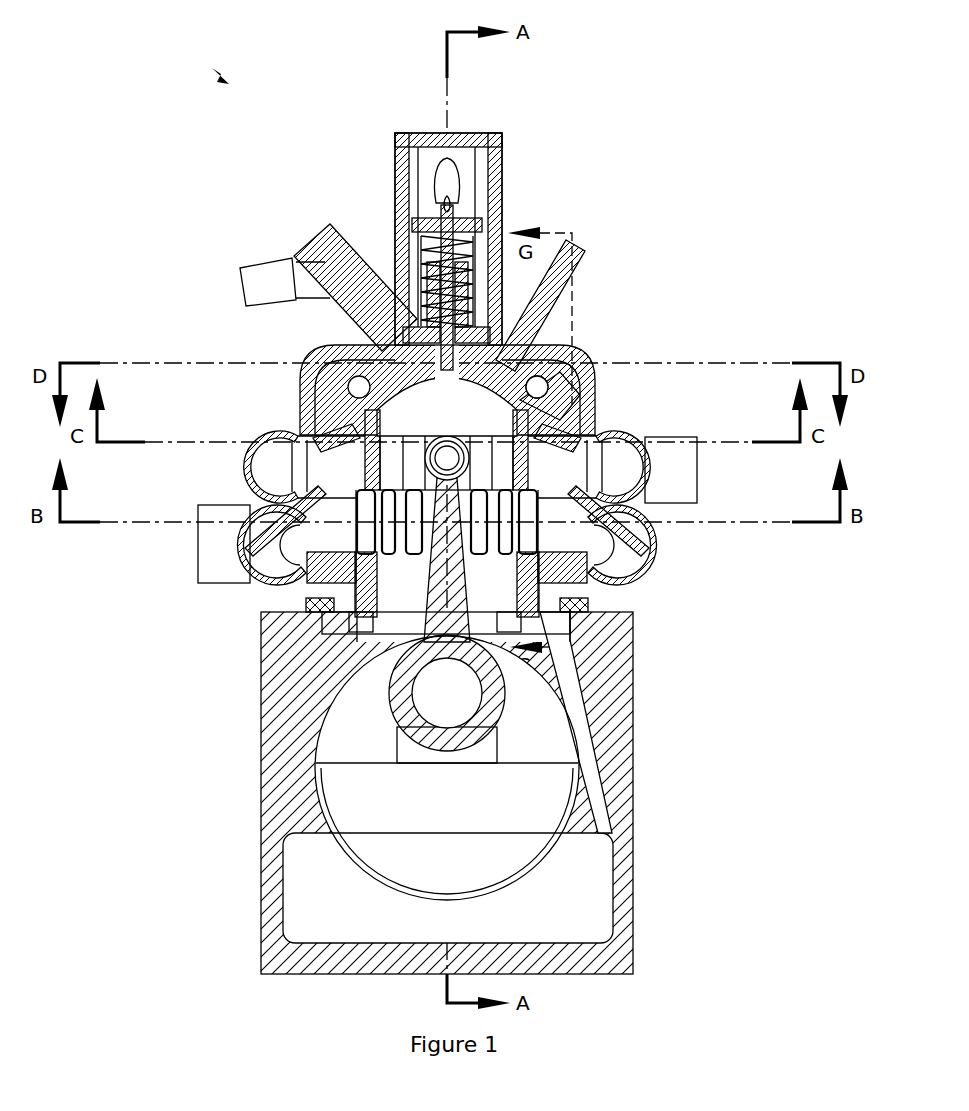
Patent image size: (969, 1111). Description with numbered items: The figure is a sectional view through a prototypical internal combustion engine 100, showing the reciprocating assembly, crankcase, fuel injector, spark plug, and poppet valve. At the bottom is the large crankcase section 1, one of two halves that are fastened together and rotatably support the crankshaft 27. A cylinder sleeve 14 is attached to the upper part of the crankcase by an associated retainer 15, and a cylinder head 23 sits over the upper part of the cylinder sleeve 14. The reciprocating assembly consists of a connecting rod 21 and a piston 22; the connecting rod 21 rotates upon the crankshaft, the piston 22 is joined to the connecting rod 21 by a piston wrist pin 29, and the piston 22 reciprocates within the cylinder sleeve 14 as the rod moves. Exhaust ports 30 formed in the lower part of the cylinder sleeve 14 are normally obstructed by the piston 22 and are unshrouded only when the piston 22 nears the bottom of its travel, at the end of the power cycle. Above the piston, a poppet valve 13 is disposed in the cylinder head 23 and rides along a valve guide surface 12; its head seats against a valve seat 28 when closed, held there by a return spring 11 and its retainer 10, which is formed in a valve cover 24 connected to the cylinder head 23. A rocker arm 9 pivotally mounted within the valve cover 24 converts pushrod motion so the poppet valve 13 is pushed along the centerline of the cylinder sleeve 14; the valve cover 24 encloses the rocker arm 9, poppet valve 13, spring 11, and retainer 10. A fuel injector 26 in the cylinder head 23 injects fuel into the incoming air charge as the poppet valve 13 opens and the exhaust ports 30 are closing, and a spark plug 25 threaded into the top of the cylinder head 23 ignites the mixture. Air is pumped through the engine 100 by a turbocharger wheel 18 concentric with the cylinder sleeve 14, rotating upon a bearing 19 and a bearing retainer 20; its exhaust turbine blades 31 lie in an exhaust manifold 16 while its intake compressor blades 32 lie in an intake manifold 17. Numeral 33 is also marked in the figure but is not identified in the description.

The engine 100 is at (226, 80).
The large crankcase section 1 is at (272, 905).
The rocker arm 9 is at (452, 183).
The retainer 10 is at (450, 222).
The return spring 11 is at (417, 248).
The valve guide surface 12 is at (470, 232).
The poppet valve 13 is at (428, 235).
The cylinder sleeve 14 is at (548, 621).
The retainer 15 is at (410, 548).
The exhaust manifold 16 is at (224, 551).
The intake manifold 17 is at (672, 478).
The turbocharger wheel 18 is at (345, 486).
The bearing 19 is at (352, 470).
The bearing retainer 20 is at (362, 465).
The connecting rod 21 is at (447, 638).
The piston 22 is at (568, 412).
The cylinder head 23 is at (305, 362).
The valve cover 24 is at (412, 135).
The spark plug 25 is at (556, 290).
The fuel injector 26 is at (292, 296).
The crankshaft 27 is at (360, 790).
The valve seat 28 is at (563, 378).
The piston wrist pin 29 is at (385, 505).
The exhaust port 30 is at (522, 530).
The exhaust turbine blades 31 is at (547, 518).
The intake compressor blades 32 is at (562, 437).
The lower coolant duct 33 is at (560, 402).